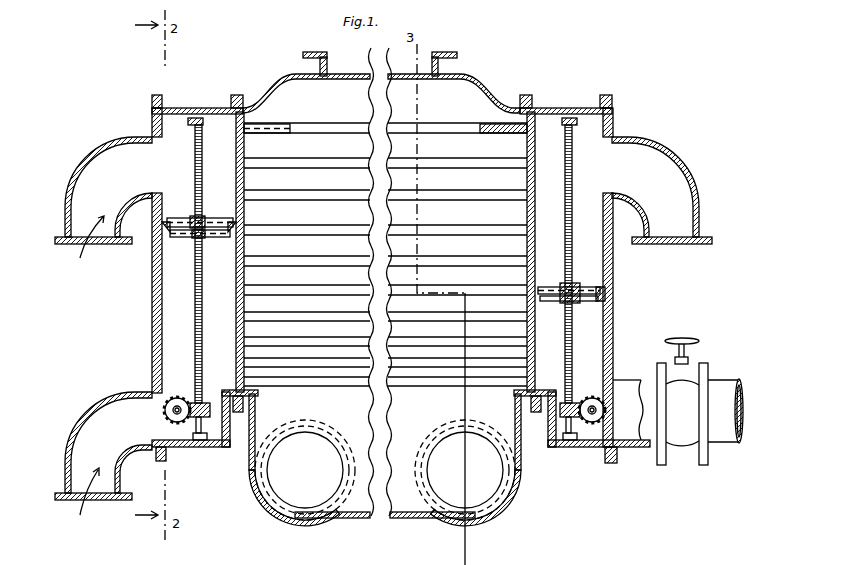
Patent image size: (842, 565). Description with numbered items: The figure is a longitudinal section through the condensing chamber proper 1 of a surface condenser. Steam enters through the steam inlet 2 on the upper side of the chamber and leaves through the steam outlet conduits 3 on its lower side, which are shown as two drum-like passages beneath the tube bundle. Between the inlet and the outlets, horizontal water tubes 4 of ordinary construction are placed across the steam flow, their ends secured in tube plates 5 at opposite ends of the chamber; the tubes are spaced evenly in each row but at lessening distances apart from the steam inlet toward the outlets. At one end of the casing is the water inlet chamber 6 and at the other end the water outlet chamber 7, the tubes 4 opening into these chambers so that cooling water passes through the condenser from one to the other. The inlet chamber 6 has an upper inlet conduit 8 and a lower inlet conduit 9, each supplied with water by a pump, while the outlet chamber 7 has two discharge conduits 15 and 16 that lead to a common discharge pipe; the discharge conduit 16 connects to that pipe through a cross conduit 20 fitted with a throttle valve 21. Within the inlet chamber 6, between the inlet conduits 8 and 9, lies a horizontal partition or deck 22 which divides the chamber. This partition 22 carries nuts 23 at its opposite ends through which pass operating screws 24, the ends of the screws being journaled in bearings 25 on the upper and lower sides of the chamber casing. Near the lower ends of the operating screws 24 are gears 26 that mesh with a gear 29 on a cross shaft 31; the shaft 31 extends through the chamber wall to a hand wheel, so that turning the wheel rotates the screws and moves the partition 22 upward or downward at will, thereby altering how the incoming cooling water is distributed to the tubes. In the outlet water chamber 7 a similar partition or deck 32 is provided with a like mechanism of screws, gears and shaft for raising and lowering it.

The condensing chamber proper 1 is at (448, 95).
The steam inlet 2 is at (413, 58).
The steam outlet conduits 3 is at (394, 479).
The water tubes 4 is at (415, 128).
The tube plates 5 is at (234, 143).
The water inlet chamber 6 is at (170, 282).
The water outlet chamber 7 is at (592, 322).
The upper inlet conduit 8 is at (103, 197).
The lower inlet conduit 9 is at (103, 453).
The discharge conduit 15 is at (672, 162).
The discharge conduit 16 is at (636, 430).
The cross conduit 20 is at (727, 438).
The throttle valve 21 is at (683, 377).
The partition or deck 22 is at (178, 220).
The nuts 23 is at (207, 220).
The operating screws 24 is at (195, 160).
The bearings 25 is at (202, 122).
The gears 26 is at (205, 403).
The gear 29 is at (176, 398).
The cross shaft 31 is at (166, 417).
The partition or deck 32 is at (587, 280).